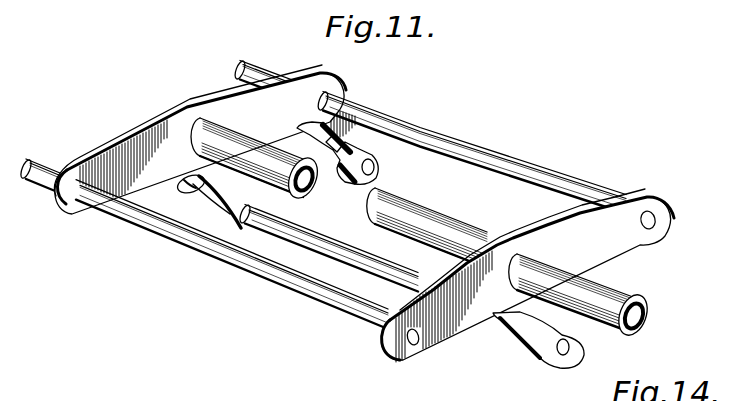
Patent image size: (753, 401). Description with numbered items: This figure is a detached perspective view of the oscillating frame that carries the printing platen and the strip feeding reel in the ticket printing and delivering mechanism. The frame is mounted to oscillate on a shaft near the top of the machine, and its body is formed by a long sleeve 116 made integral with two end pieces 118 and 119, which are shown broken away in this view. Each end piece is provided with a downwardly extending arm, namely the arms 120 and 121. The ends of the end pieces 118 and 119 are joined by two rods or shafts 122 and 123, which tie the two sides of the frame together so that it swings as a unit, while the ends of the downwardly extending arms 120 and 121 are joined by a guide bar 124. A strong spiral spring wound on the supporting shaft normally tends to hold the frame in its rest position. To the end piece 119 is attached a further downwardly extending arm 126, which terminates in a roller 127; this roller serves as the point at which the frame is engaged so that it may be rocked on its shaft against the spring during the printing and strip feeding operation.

The long sleeve 116 is at (613, 292).
The end piece 118 is at (468, 326).
The end piece 119 is at (109, 152).
The downwardly extending arm 120 is at (545, 345).
The downwardly extending arm 121 is at (213, 224).
The rod or shaft 122 is at (305, 298).
The rod or shaft 123 is at (522, 173).
The guide bar 124 is at (327, 226).
The downwardly extending arm 126 is at (353, 115).
The roller 127 is at (380, 185).